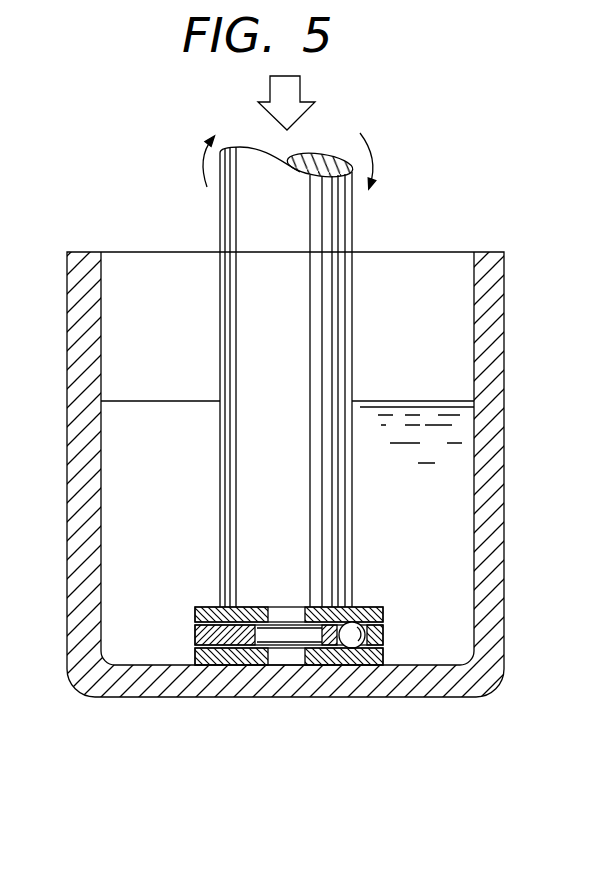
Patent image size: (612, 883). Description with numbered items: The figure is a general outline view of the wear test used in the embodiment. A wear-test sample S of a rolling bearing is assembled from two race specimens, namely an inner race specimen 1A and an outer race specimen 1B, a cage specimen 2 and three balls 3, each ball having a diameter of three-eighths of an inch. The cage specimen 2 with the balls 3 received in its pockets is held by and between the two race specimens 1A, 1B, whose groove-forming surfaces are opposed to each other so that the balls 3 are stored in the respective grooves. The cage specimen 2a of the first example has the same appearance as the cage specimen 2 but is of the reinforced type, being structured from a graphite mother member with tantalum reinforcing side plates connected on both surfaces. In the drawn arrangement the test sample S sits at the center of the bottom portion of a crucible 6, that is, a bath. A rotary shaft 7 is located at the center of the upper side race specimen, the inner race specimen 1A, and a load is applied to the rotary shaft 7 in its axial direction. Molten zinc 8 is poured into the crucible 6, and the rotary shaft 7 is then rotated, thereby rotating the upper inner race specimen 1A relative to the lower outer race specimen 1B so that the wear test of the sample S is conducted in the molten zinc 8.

The crucible 6 is at (492, 283).
The rotary shaft 7 is at (332, 223).
The molten zinc 8 is at (465, 431).
The inner race specimen 1A is at (373, 607).
The outer race specimen 1B is at (373, 665).
The cage specimen 2 is at (398, 628).
The cage specimen 2a is at (329, 635).
The ball 3 is at (350, 648).
The wear-test sample S is at (313, 642).